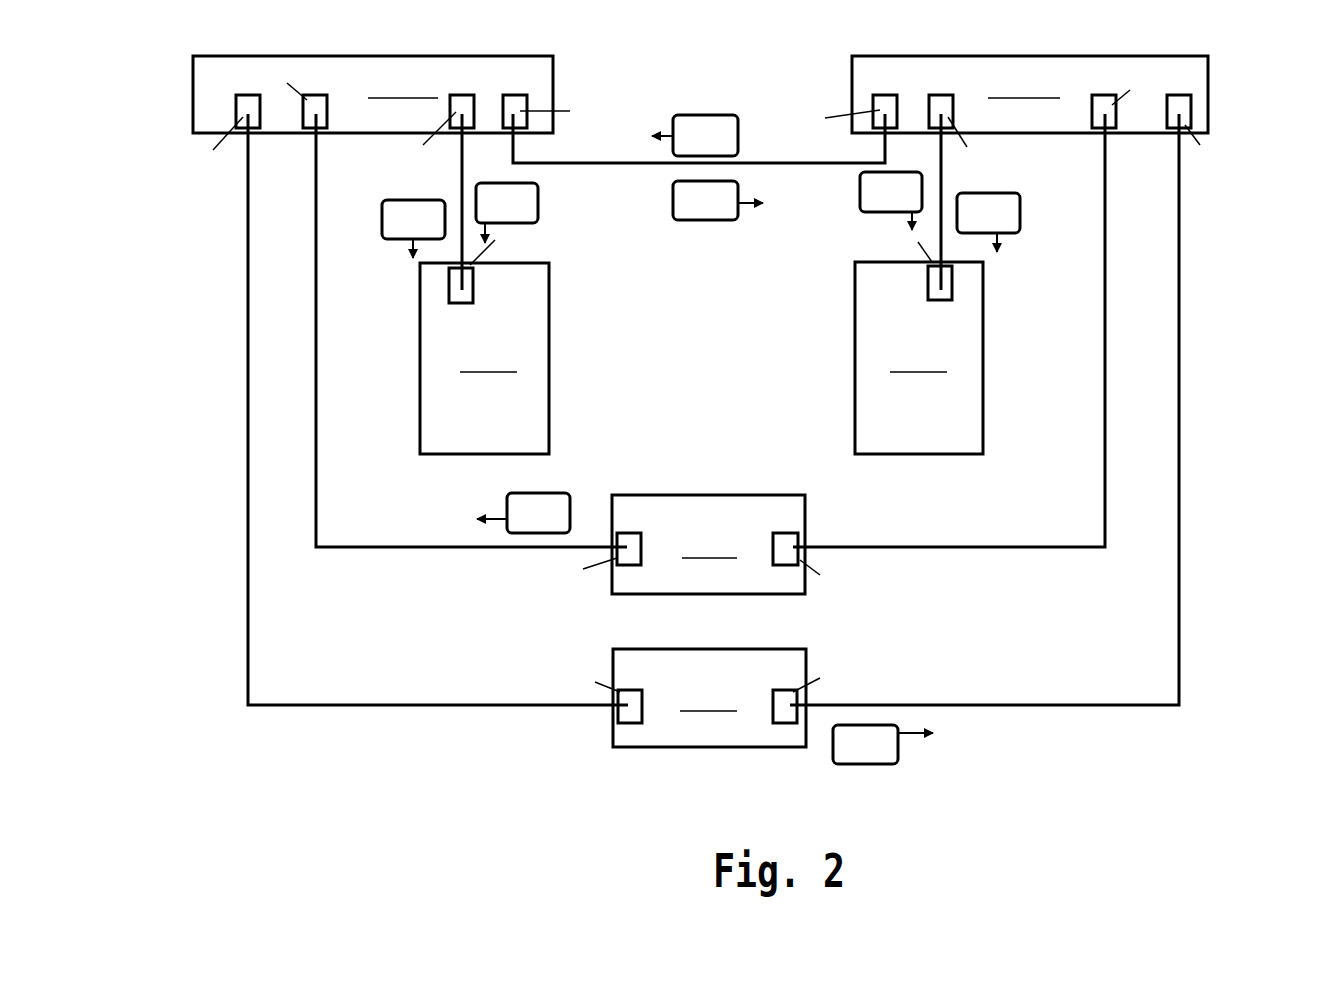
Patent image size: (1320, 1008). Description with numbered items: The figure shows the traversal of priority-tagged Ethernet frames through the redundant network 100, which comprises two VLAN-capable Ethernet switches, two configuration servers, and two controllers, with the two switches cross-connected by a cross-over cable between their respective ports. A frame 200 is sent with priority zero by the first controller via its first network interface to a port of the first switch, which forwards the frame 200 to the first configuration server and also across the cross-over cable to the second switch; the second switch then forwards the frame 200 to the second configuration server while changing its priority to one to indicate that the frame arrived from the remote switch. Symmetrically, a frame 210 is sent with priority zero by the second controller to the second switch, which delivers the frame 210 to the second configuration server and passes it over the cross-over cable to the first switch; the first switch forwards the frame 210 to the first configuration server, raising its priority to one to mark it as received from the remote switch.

The redundant network 100 is at (358, 752).
The frame 200 is at (388, 226).
The frame 210 is at (538, 209).